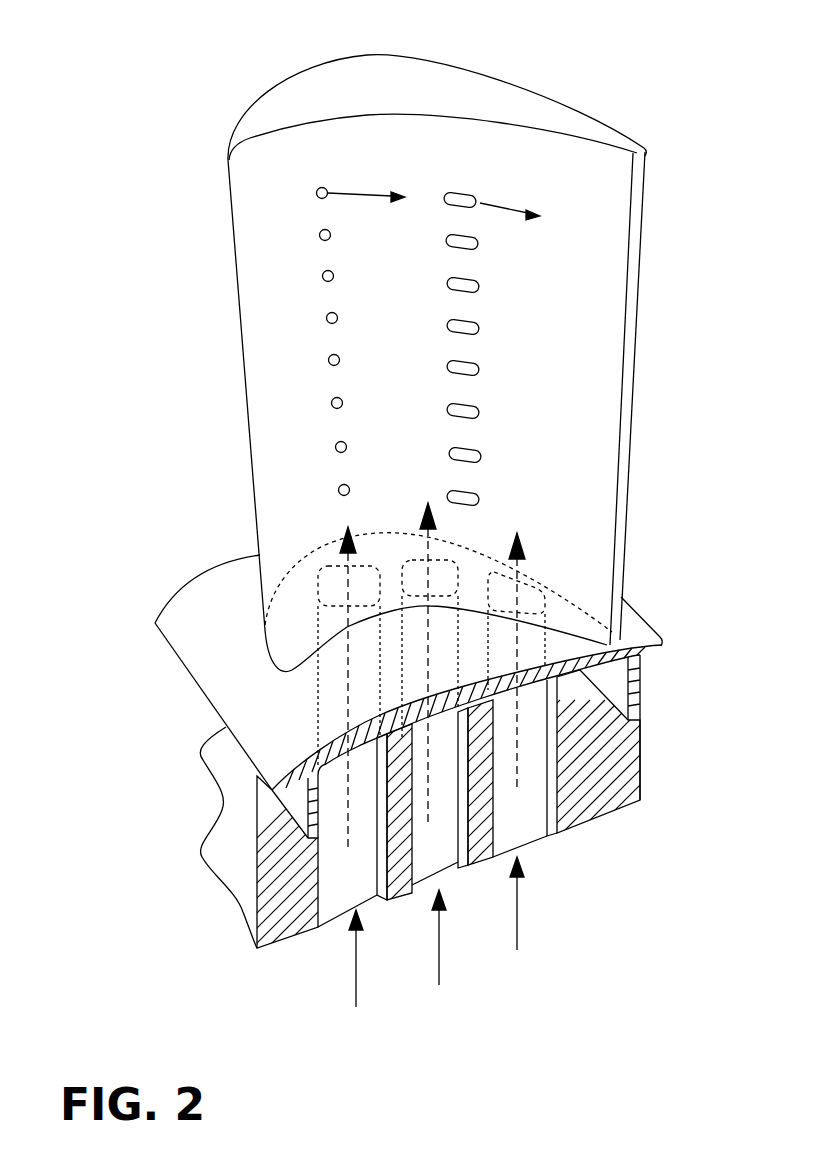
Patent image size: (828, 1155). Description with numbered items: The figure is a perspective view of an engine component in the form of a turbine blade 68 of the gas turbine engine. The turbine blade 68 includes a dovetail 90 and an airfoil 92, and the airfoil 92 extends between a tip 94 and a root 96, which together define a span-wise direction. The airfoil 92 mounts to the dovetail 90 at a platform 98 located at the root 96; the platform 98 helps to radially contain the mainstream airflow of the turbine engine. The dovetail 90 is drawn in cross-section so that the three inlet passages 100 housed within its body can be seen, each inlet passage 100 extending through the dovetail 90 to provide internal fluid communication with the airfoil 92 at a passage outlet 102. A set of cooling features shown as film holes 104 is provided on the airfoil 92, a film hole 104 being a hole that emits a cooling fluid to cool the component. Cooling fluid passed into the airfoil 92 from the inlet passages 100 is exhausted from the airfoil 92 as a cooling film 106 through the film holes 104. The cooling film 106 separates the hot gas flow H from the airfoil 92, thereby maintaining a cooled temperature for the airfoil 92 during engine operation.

The turbine blade 68 is at (83, 156).
The dovetail 90 is at (243, 825).
The airfoil 92 is at (245, 438).
The tip 94 is at (322, 97).
The root 96 is at (573, 625).
The platform 98 is at (225, 657).
The inlet passage 100 is at (434, 916).
The passage outlet 102 is at (490, 598).
The film hole 104 is at (316, 193).
The cooling film 106 is at (370, 193).
The hot gas flow H is at (271, 319).